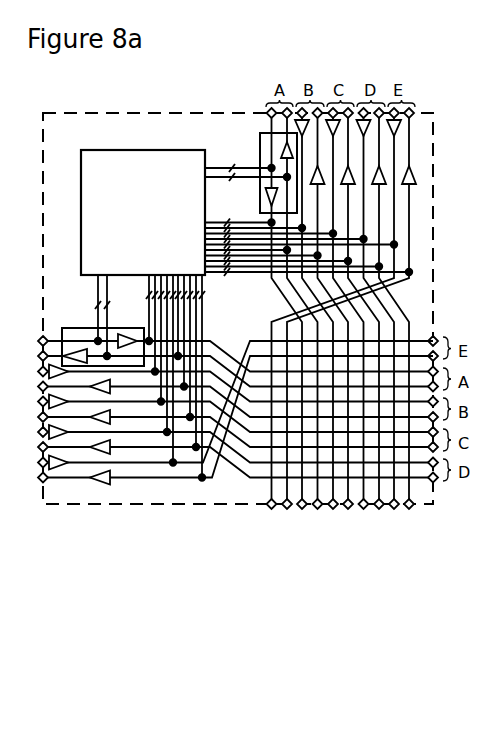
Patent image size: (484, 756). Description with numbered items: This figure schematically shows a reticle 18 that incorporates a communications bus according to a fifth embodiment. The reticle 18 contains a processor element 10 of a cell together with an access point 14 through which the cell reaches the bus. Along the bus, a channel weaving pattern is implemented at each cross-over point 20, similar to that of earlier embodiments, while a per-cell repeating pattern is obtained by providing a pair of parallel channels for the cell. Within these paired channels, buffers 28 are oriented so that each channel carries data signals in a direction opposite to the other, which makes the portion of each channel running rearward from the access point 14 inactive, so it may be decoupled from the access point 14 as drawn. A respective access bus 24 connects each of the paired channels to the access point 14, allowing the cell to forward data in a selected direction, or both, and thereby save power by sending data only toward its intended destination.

The processor element 10 is at (143, 212).
The access point 14 is at (259, 148).
The reticle 18 is at (172, 113).
The cross-over point 20 is at (413, 305).
The access bus 24 is at (214, 165).
The buffers 28 is at (400, 123).